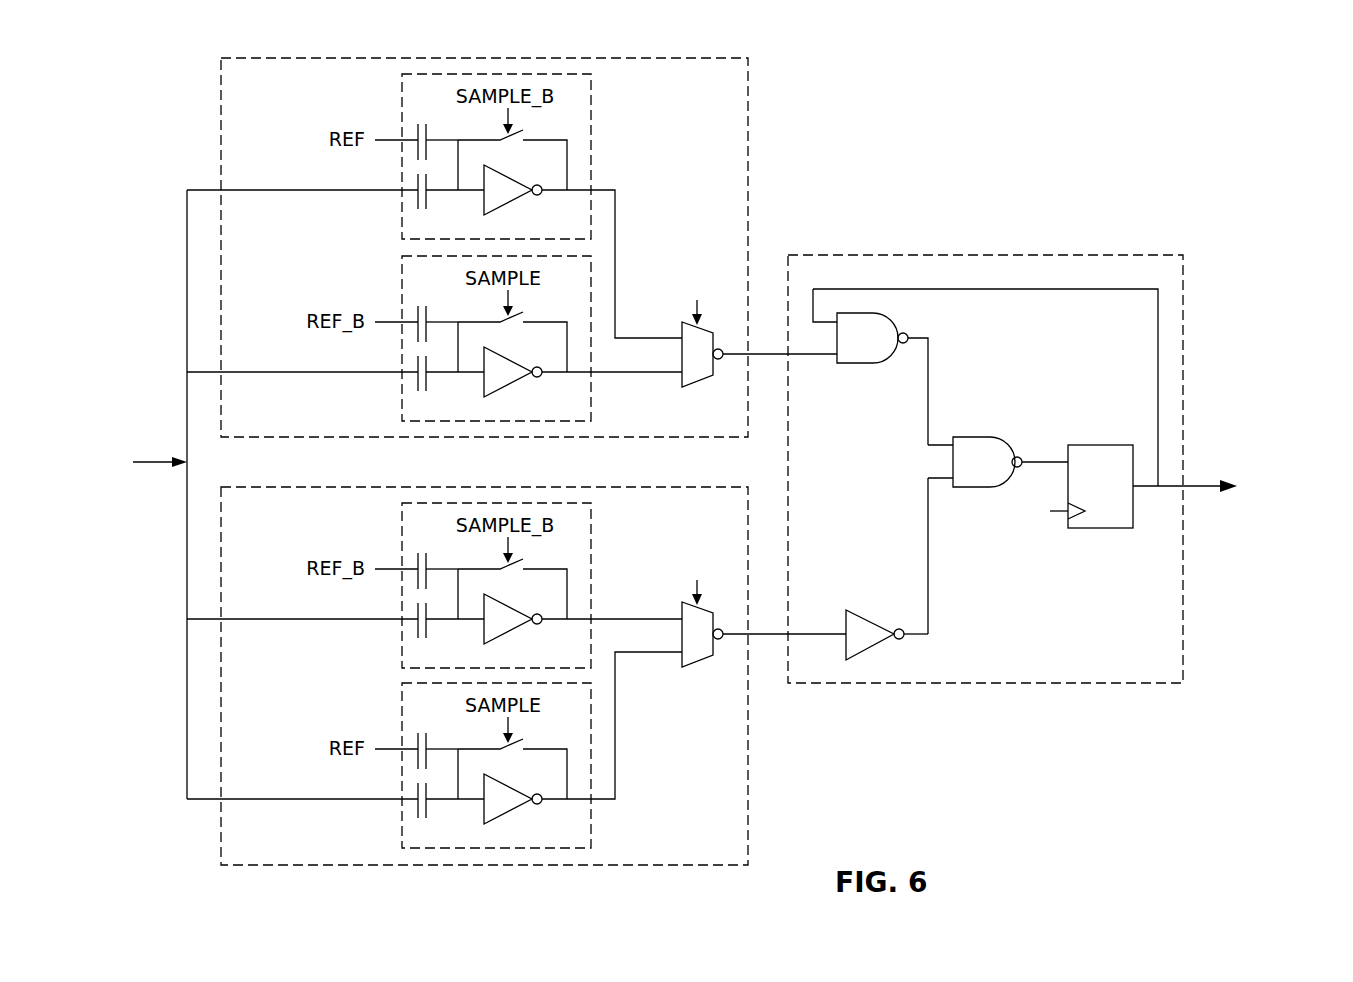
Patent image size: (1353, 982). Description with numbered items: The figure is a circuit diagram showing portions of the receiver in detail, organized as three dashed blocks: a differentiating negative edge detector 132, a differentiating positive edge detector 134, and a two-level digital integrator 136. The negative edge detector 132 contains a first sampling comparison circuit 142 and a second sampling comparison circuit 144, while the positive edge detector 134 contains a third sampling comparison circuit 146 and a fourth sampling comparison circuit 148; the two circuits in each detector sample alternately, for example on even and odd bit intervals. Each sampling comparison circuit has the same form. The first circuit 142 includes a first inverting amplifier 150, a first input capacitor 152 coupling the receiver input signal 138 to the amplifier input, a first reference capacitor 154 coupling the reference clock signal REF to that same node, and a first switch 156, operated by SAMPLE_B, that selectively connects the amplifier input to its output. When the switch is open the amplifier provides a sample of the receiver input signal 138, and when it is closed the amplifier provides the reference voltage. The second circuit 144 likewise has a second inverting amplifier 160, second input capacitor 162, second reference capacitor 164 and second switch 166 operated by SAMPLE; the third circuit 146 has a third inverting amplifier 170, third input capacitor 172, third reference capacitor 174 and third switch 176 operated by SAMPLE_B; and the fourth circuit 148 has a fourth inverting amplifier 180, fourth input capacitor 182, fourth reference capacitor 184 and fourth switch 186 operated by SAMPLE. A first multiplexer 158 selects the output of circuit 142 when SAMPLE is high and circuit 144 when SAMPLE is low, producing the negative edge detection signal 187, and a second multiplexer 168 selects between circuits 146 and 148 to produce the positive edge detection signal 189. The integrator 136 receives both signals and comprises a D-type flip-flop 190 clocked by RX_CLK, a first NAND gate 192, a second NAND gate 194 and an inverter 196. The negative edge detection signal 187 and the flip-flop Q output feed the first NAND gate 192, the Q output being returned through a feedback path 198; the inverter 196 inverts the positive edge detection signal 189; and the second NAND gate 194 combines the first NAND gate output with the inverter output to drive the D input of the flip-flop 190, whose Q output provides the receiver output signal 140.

The differentiating negative edge detector 132 is at (748, 128).
The differentiating positive edge detector 134 is at (748, 770).
The two-level digital integrator 136 is at (983, 255).
The receiver input signal 138 is at (152, 466).
The receiver output signal 140 is at (1210, 489).
The first sampling comparison circuit 142 is at (402, 97).
The second sampling comparison circuit 144 is at (402, 279).
The third sampling comparison circuit 146 is at (402, 526).
The fourth sampling comparison circuit 148 is at (402, 706).
The first inverting amplifier 150 is at (509, 205).
The first input capacitor 152 is at (414, 199).
The first reference capacitor 154 is at (414, 150).
The first switch 156 is at (520, 135).
The first multiplexer 158 is at (700, 388).
The second inverting amplifier 160 is at (509, 387).
The second input capacitor 162 is at (414, 381).
The second reference capacitor 164 is at (414, 332).
The second switch 166 is at (520, 317).
The second multiplexer 168 is at (700, 668).
The third inverting amplifier 170 is at (509, 634).
The third input capacitor 172 is at (414, 628).
The third reference capacitor 174 is at (414, 579).
The third switch 176 is at (520, 564).
The fourth inverting amplifier 180 is at (509, 814).
The fourth input capacitor 182 is at (414, 808).
The fourth reference capacitor 184 is at (414, 759).
The fourth switch 186 is at (520, 744).
The negative edge detection signal 187 is at (770, 357).
The positive edge detection signal 189 is at (770, 637).
The D-type flip-flop 190 is at (1103, 444).
The first NAND gate 192 is at (862, 366).
The second NAND gate 194 is at (970, 436).
The inverter 196 is at (875, 620).
The feedback path 198 is at (1038, 292).